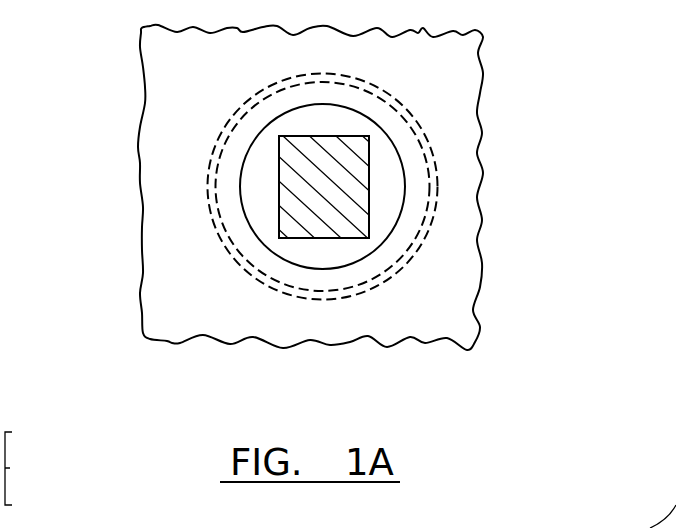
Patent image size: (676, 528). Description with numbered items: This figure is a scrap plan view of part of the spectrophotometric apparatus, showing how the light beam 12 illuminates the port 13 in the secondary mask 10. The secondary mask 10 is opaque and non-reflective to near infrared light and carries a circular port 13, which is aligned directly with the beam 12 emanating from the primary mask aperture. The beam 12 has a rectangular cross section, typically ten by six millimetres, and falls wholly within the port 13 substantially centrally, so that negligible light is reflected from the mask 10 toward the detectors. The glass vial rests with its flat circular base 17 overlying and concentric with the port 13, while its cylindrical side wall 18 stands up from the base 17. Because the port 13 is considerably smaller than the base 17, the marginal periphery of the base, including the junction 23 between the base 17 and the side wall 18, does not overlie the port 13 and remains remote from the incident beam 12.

The secondary mask 10 is at (458, 87).
The beam 12 is at (350, 218).
The circular port 13 is at (412, 201).
The flat circular base 17 is at (246, 251).
The cylindrical side wall 18 is at (408, 253).
The junction between base and side wall 23 is at (216, 133).